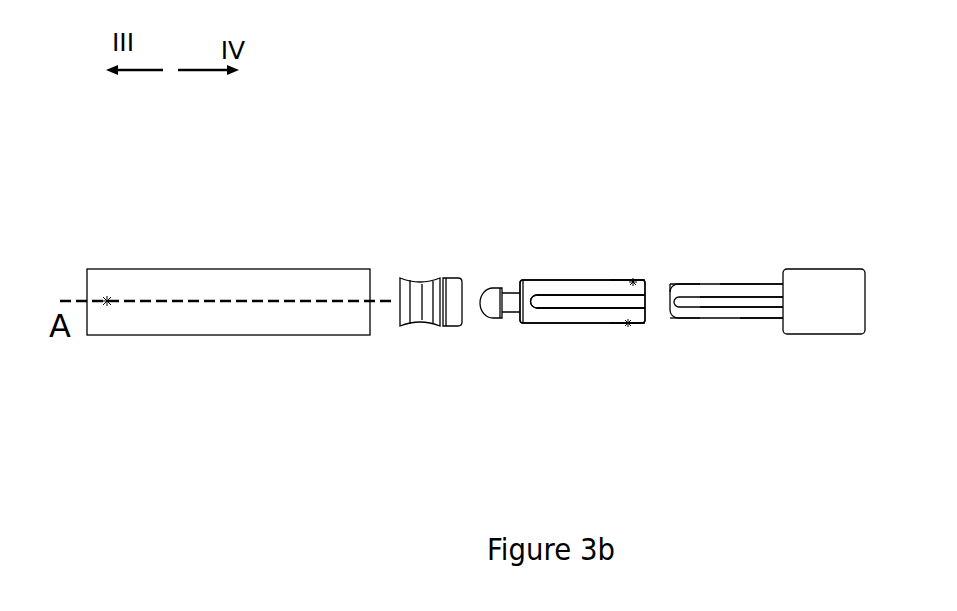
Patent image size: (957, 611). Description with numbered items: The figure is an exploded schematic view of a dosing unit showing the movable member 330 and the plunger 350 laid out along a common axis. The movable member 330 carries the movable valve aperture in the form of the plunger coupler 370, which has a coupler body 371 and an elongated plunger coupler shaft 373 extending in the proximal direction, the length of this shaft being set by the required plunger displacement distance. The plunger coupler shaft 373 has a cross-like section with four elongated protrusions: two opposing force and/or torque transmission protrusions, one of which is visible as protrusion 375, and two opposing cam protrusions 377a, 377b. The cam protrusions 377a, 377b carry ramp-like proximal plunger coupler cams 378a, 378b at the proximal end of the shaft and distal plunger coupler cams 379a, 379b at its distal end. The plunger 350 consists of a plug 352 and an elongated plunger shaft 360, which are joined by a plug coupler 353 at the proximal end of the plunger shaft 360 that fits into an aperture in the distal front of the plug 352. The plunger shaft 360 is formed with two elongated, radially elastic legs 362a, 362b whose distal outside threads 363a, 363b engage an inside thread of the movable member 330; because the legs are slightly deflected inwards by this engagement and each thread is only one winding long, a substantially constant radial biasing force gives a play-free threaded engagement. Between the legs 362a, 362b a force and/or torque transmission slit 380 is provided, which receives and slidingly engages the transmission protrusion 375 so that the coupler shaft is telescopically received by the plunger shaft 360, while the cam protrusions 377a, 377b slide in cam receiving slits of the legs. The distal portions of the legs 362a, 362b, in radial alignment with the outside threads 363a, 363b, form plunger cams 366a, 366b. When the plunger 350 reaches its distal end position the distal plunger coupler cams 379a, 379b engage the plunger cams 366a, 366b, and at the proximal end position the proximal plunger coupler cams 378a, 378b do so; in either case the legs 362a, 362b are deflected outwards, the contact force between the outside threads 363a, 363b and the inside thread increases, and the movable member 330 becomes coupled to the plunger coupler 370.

The movable member 330 is at (170, 257).
The plunger 350 is at (595, 305).
The plug 352 is at (420, 277).
The plug coupler 353 is at (500, 283).
The plunger shaft 360 is at (550, 279).
The leg 362a is at (581, 294).
The leg 362b is at (580, 308).
The outside thread 363a is at (630, 280).
The outside thread 363b is at (607, 330).
The plunger cam 366a is at (635, 281).
The plunger cam 366b is at (641, 330).
The plunger coupler 370 is at (107, 299).
The coupler body 371 is at (818, 292).
The plunger coupler shaft 373 is at (775, 283).
The force and/or torque transmission protrusion 375 is at (730, 318).
The cam protrusion 377a is at (712, 290).
The cam protrusion 377b is at (708, 318).
The proximal plunger coupler cam 378a is at (675, 280).
The proximal plunger coupler cam 378b is at (680, 322).
The distal plunger coupler cam 379a is at (735, 283).
The distal plunger coupler cam 379b is at (773, 320).
The force and/or torque transmission slit 380 is at (582, 318).